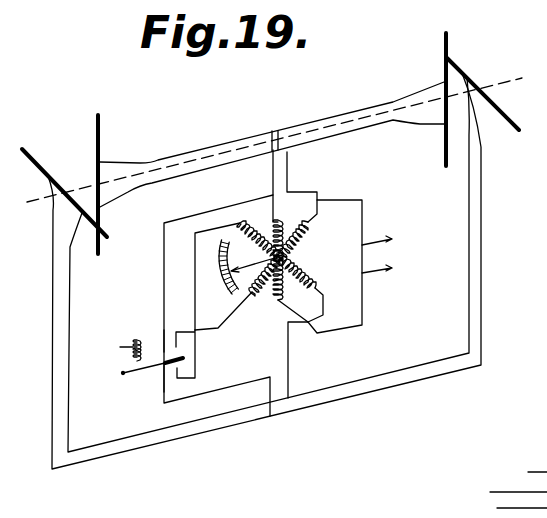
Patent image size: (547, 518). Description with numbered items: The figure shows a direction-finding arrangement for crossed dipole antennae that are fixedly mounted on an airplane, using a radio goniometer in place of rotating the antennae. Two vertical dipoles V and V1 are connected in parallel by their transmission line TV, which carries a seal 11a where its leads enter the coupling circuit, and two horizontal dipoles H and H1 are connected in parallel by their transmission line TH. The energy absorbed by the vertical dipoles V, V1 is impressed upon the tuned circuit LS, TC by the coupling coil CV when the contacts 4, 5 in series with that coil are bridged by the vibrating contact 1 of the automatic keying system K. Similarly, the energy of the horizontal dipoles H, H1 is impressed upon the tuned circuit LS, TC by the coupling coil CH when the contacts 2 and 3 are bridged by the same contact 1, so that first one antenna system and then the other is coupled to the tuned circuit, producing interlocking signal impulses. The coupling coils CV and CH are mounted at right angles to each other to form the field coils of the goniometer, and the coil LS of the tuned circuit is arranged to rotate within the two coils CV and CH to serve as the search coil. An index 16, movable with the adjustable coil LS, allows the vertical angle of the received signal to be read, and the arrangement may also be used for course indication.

The vertical dipole V1 is at (100, 150).
The horizontal dipole H1 is at (39, 164).
The vertical dipole V is at (444, 40).
The horizontal dipole H is at (504, 110).
The transmission line TV is at (218, 153).
The tube seal 11a is at (262, 128).
The transmission line TH is at (62, 212).
The automatic key K is at (150, 417).
The coupling coil CH is at (243, 224).
The coil of the tuned circuit LS is at (282, 230).
The coupling coil CV is at (305, 240).
The index 16 is at (260, 264).
The tuned circuit condenser TC is at (374, 257).
The vibrating contact 1 is at (165, 360).
The contact 2 is at (165, 343).
The contact 3 is at (182, 346).
The contact 4 is at (163, 375).
The contact 5 is at (188, 369).